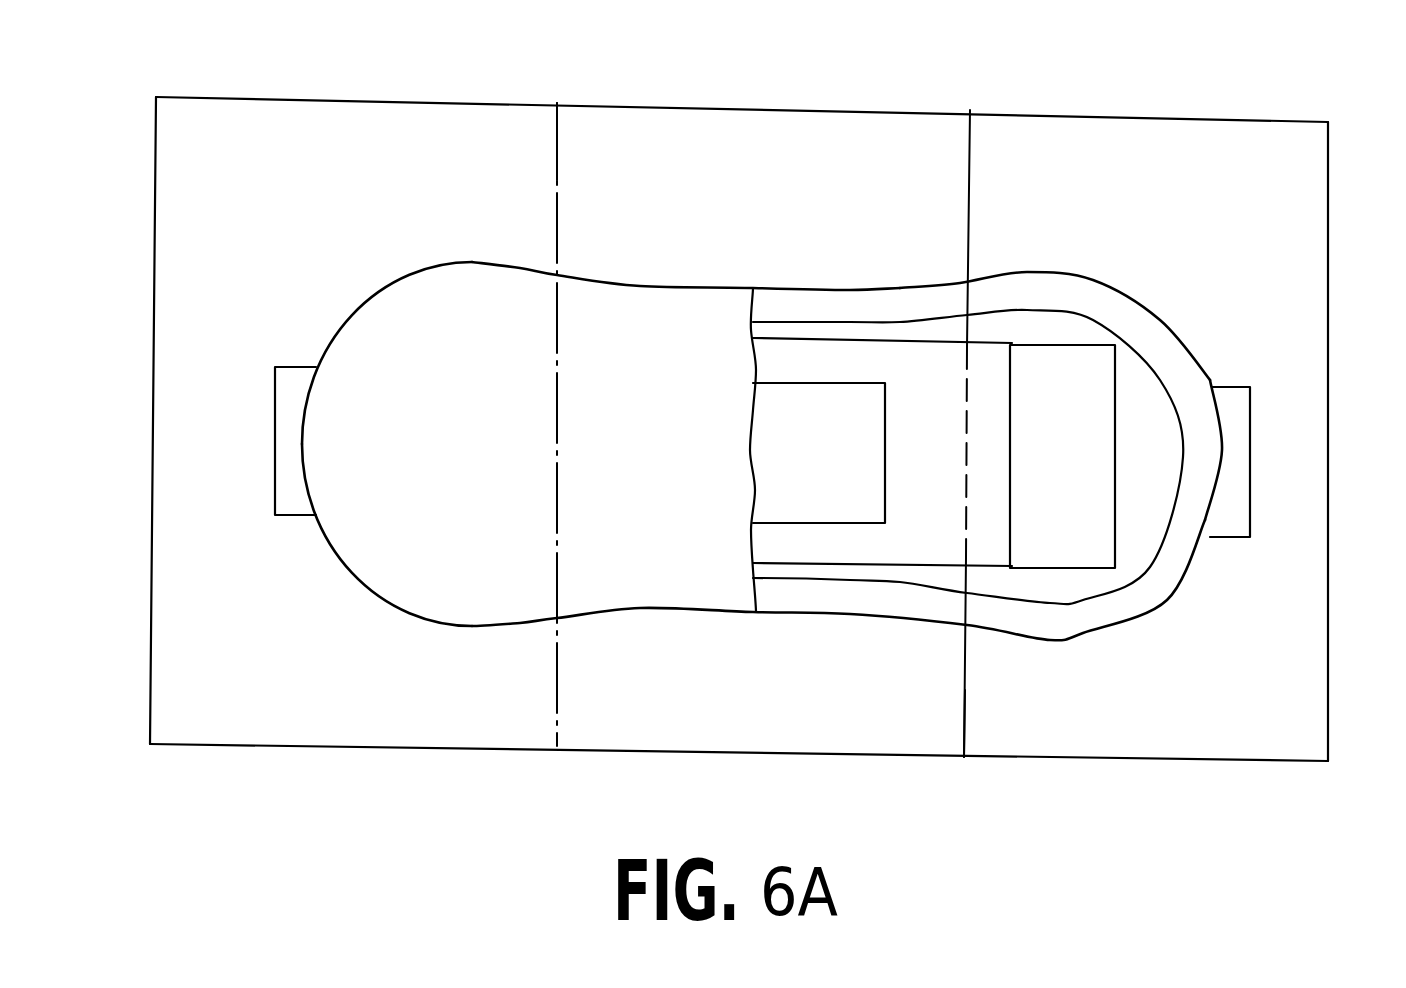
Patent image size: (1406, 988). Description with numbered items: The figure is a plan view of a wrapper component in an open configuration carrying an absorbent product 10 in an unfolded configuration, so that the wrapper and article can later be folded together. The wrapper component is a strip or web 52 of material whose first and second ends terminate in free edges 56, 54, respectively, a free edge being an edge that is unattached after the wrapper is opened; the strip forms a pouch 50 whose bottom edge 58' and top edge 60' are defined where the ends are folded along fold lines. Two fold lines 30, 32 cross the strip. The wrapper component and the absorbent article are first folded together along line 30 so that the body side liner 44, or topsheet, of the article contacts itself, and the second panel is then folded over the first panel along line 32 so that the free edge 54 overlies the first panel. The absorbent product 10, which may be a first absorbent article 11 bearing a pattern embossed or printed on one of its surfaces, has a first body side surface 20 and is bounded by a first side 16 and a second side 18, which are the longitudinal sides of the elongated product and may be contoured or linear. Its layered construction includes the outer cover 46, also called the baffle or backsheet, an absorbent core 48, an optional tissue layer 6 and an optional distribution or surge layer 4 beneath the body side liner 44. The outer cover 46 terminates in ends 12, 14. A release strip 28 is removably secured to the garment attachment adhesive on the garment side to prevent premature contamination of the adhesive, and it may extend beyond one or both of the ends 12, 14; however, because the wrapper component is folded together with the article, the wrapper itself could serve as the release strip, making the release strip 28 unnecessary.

The distribution layer 4 is at (835, 497).
The tissue layer 6 is at (982, 535).
The absorbent product 10 is at (610, 266).
The first absorbent article 11 is at (944, 104).
The end of the outer cover 12 is at (302, 463).
The end of the outer cover 14 is at (1220, 443).
The first side 16 is at (687, 612).
The second side 18 is at (727, 287).
The first body side surface 20 is at (628, 340).
The release strip 28 is at (297, 367).
The fold line 30 is at (553, 143).
The fold line 32 is at (973, 137).
The body side liner 44 is at (473, 582).
The outer cover 46 is at (997, 280).
The absorbent core 48 is at (1035, 327).
The pouch 50 is at (483, 725).
The strip or web 52 is at (732, 127).
The free edge 54 is at (1327, 448).
The free edge 56 is at (153, 477).
The bottom edge 58' is at (593, 108).
The top edge 60' is at (1007, 755).